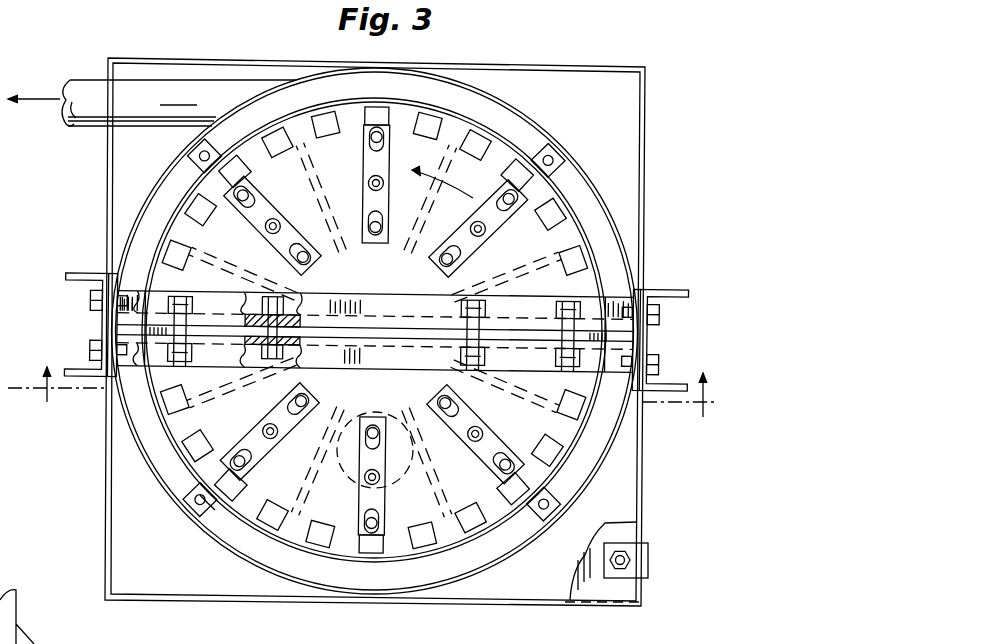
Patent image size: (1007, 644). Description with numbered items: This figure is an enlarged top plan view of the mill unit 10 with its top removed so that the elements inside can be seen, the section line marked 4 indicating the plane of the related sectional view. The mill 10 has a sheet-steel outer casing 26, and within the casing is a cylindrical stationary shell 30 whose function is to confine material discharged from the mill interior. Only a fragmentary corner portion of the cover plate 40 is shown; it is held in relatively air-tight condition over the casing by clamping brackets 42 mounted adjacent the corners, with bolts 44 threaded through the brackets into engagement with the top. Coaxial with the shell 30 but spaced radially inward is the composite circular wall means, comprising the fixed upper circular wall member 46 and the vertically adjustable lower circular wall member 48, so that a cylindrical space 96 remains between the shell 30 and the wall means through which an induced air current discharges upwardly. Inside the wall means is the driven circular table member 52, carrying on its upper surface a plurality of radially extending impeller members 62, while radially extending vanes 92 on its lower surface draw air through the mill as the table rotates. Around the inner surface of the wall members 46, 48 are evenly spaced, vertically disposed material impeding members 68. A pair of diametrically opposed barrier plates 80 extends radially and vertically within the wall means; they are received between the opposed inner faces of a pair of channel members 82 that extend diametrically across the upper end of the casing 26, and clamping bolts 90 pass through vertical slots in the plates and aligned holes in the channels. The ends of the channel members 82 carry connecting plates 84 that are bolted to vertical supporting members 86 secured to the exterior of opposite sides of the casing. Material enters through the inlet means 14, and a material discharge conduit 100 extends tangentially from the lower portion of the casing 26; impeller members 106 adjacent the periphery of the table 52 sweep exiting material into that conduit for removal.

The section line 4- 4 is at (363, 402).
The mill unit 10 is at (586, 68).
The inlet means 14 is at (360, 410).
The outer casing 26 is at (645, 172).
The stationary shell 30 is at (549, 142).
The cover plate 40 is at (610, 595).
The clamping brackets 42 is at (648, 555).
The bolts 44 is at (630, 560).
The upper circular wall member 46 is at (197, 475).
The lower circular wall member 48 is at (167, 398).
The circular table member 52 is at (295, 488).
The impeller members 62 is at (380, 218).
The material impeding members 68 is at (205, 205).
The barrier plates 80 is at (212, 330).
The channel members 82 is at (618, 300).
The connecting plates 84 is at (110, 330).
The vertical supporting members 86 is at (85, 278).
The clamping bolts 90 is at (190, 366).
The vanes 92 is at (320, 182).
The cylindrical space 96 is at (505, 118).
The material discharge conduit 100 is at (176, 100).
The impeller members 106 is at (216, 145).